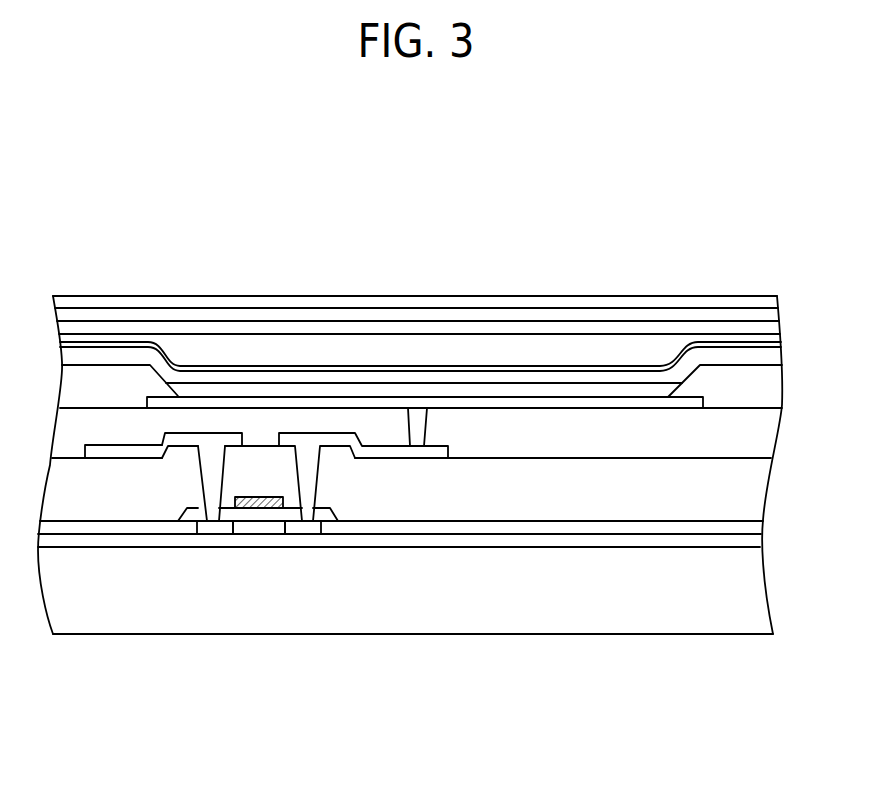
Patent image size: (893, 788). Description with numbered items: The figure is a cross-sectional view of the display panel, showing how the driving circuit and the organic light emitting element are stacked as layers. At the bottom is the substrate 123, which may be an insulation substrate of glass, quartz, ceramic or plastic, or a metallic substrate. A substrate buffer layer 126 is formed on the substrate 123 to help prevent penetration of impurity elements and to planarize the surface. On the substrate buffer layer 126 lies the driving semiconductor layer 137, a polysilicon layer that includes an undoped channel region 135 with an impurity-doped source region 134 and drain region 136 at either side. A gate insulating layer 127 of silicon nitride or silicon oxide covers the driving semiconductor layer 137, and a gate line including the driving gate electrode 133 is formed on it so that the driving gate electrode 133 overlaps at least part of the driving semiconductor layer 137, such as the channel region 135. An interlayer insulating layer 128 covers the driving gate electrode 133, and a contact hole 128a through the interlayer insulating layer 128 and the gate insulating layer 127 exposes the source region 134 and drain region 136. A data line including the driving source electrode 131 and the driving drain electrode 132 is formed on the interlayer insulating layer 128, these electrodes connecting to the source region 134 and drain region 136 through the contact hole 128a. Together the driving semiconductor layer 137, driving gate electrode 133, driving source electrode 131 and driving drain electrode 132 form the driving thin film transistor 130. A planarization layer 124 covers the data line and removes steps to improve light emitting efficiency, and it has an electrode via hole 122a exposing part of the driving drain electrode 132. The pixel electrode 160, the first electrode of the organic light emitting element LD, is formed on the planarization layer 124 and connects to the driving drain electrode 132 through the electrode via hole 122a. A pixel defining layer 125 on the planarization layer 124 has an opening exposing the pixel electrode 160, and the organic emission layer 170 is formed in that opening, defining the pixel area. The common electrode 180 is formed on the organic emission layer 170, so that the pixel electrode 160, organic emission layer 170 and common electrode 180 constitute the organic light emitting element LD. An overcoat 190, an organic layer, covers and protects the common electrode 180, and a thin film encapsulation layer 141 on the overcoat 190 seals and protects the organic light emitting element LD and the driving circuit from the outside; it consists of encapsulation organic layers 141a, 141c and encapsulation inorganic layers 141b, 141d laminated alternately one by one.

The substrate 123 is at (453, 610).
The planarization layer 124 is at (515, 443).
The pixel defining layer 125 is at (737, 392).
The substrate buffer layer 126 is at (673, 542).
The gate insulating layer 127 is at (622, 528).
The interlayer insulating layer 128 is at (572, 502).
The contact hole 128a is at (205, 468).
The electrode via hole 122a is at (420, 432).
The driving thin film transistor 130 is at (408, 739).
The driving source electrode 131 is at (102, 452).
The driving drain electrode 132 is at (383, 455).
The driving gate electrode 133 is at (233, 503).
The source region 134 is at (208, 530).
The channel region 135 is at (257, 528).
The drain region 136 is at (313, 528).
The driving semiconductor layer 137 is at (182, 697).
The thin film encapsulation layer 141 is at (748, 223).
The encapsulation organic layer 141a is at (547, 342).
The encapsulation inorganic layer 141b is at (602, 328).
The encapsulation organic layer 141c is at (657, 313).
The encapsulation inorganic layer 141d is at (713, 300).
The pixel electrode 160 is at (258, 400).
The organic emission layer 170 is at (305, 392).
The common electrode 180 is at (363, 377).
The overcoat 190 is at (122, 341).
The organic light emitting element LD is at (230, 223).